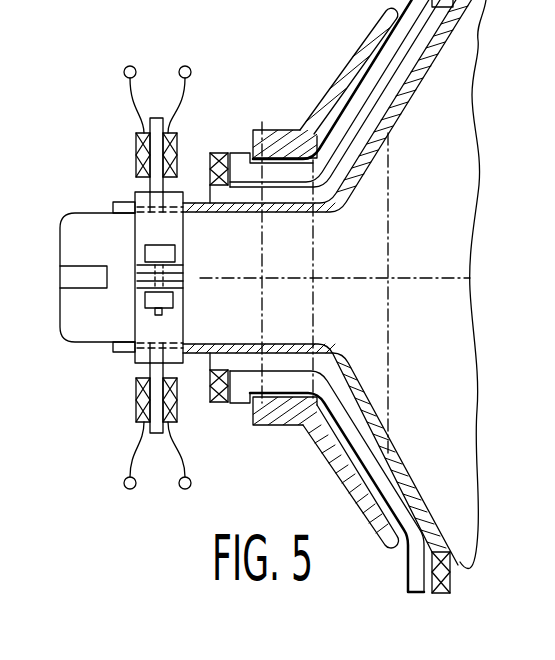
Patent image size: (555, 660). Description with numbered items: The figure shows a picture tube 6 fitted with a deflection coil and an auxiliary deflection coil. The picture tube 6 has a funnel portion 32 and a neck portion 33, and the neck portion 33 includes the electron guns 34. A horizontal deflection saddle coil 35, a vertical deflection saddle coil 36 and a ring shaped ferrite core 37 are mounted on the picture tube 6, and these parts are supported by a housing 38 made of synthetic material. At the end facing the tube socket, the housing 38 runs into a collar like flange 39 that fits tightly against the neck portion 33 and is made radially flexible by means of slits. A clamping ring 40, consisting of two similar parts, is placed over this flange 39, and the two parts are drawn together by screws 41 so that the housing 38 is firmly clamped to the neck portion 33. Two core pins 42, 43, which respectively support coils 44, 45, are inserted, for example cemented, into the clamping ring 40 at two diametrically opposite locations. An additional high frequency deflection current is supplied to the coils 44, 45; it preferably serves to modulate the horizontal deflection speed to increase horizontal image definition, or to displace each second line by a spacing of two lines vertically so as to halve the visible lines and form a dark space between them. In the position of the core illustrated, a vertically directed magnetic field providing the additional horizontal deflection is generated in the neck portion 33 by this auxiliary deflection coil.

The picture tube 6 is at (477, 48).
The funnel portion 32 is at (401, 113).
The neck portion 33 is at (102, 213).
The electron guns 34 is at (68, 277).
The horizontal deflection saddle coil 35 is at (223, 155).
The vertical deflection saddle coil 36 is at (237, 153).
The ring shaped ferrite core 37 is at (361, 45).
The housing 38 is at (340, 212).
The collar like flange 39 is at (112, 345).
The clamping ring 40 is at (185, 226).
The screws 41 is at (172, 252).
The core pin 42 is at (152, 118).
The core pin 43 is at (152, 435).
The coil 44 is at (177, 143).
The coil 45 is at (177, 407).